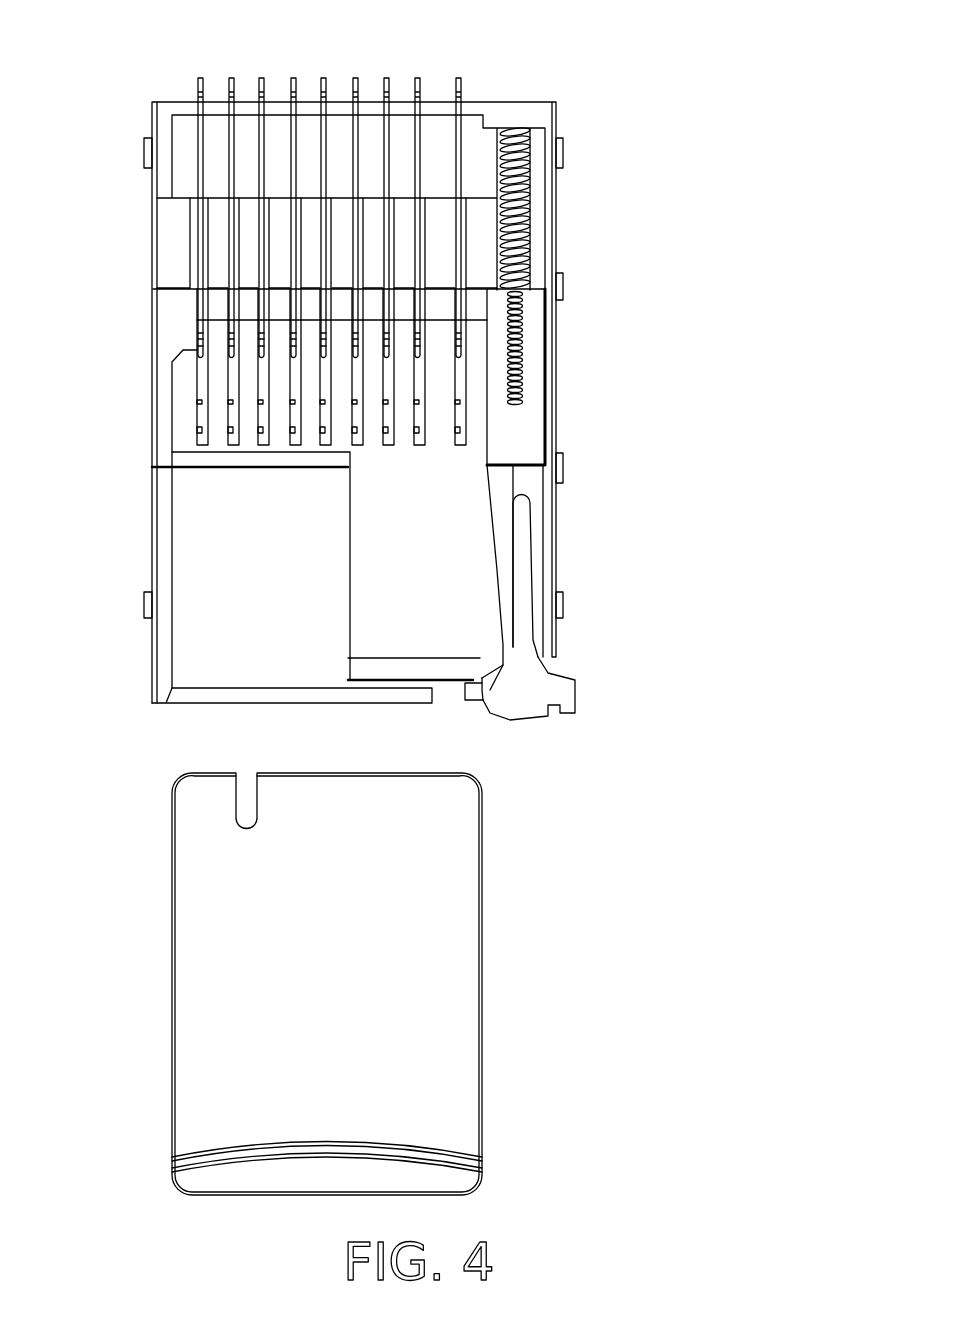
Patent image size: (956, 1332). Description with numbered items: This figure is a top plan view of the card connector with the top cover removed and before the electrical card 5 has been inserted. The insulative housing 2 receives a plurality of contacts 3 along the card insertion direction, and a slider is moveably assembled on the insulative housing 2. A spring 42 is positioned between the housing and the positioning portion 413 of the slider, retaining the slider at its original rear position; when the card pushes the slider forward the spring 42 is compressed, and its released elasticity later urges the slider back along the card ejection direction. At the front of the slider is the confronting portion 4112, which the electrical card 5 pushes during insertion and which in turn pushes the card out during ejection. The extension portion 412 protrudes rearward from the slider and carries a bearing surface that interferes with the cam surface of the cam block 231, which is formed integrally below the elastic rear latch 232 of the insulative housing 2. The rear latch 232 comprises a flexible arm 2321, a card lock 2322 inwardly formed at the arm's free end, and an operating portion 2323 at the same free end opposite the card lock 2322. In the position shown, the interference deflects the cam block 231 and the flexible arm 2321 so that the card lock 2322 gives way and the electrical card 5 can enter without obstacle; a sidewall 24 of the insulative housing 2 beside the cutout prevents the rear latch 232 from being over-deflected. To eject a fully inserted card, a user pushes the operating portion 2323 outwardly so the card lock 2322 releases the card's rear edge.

The insulative housing 2 is at (247, 562).
The contacts 3 is at (457, 78).
The electrical card 5 is at (195, 922).
The sidewall 24 is at (540, 538).
The spring 42 is at (522, 197).
The cam block 231 is at (473, 695).
The rear latch 232 is at (644, 621).
The flexible arm 2321 is at (512, 605).
The card lock 2322 is at (493, 692).
The operating portion 2323 is at (572, 696).
The extension portion 412 is at (400, 627).
The positioning portion 413 is at (533, 422).
The confronting portion 4112 is at (178, 353).